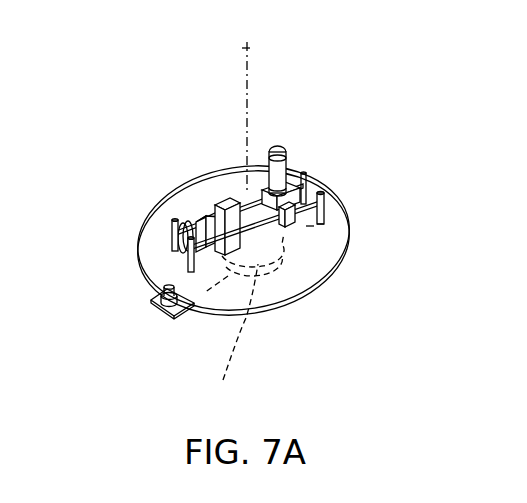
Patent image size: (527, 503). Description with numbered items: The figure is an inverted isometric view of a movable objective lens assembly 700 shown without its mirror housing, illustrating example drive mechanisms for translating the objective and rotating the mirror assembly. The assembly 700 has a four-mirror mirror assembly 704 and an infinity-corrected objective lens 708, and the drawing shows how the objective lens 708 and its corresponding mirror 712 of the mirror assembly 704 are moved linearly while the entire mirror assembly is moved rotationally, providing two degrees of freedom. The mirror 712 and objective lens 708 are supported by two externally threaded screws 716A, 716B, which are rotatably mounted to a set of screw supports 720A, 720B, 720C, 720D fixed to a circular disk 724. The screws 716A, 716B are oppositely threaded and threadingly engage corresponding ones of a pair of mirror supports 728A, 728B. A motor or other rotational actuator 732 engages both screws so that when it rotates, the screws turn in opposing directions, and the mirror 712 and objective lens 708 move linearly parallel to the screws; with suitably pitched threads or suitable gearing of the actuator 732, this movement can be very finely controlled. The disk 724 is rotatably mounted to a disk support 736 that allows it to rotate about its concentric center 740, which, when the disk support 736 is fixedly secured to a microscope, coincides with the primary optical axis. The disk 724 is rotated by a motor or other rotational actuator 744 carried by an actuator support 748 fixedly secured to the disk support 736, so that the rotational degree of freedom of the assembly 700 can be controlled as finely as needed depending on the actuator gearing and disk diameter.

The movable objective lens assembly 700 is at (286, 119).
The mirror assembly 704 is at (262, 195).
The infinity-corrected objective lens 708 is at (287, 162).
The mirror 712 is at (216, 191).
The externally threaded screw 716A is at (306, 179).
The externally threaded screw 716B is at (312, 228).
The screw support 720A is at (172, 243).
The screw support 720B is at (323, 191).
The screw support 720C is at (326, 222).
The screw support 720D is at (189, 270).
The circular disk 724 is at (276, 300).
The mirror support 728A is at (268, 189).
The mirror support 728B is at (292, 220).
The rotational actuator 732 is at (179, 226).
The disk support 736 is at (244, 319).
The concentric center 740 is at (243, 48).
The rotational actuator 744 is at (158, 312).
The actuator support 748 is at (181, 309).